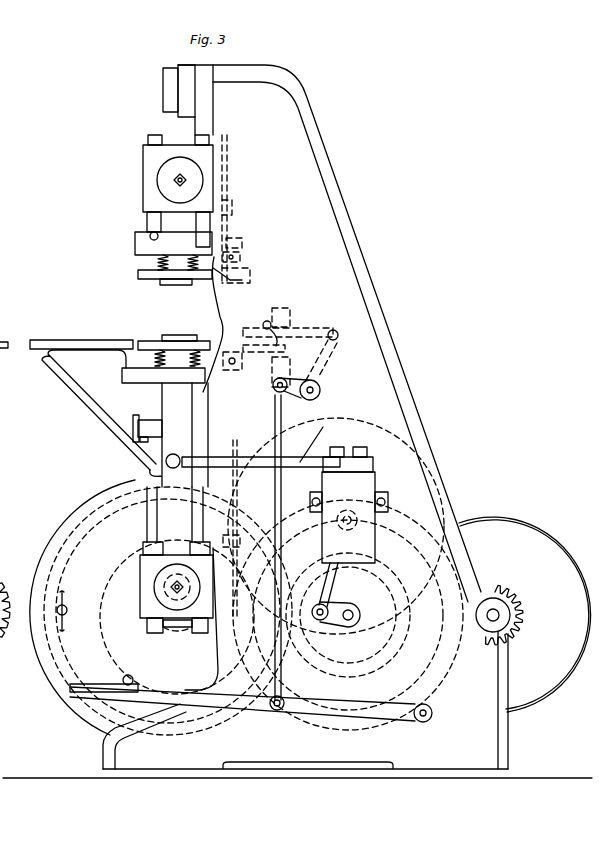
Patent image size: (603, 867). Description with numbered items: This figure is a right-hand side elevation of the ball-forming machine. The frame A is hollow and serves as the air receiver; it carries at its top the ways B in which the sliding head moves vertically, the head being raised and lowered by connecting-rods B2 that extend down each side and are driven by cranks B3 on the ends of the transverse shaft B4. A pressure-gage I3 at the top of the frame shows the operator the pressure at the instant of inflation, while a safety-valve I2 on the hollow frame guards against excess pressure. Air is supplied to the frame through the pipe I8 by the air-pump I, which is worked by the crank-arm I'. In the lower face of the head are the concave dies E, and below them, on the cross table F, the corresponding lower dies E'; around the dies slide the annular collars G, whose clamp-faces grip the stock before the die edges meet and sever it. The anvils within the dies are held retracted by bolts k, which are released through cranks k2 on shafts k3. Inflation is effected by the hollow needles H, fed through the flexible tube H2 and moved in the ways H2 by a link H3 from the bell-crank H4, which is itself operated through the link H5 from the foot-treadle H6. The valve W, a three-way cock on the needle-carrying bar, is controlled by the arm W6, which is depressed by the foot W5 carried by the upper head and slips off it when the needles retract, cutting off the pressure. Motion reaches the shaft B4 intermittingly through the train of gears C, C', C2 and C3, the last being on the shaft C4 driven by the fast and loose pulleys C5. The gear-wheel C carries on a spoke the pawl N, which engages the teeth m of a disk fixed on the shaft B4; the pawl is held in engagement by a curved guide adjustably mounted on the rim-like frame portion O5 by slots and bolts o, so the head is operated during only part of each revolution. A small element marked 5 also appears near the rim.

The frame A is at (297, 421).
The pressure-gage I3 is at (163, 90).
The ways B is at (196, 122).
The connecting-rods B2 is at (152, 240).
The concave molds or dies E is at (171, 279).
The bolts k is at (217, 290).
The shafts k3 is at (240, 246).
The cranks k2 is at (240, 262).
The foot W5 is at (222, 280).
The annular collars G is at (179, 343).
The lower dies E' is at (105, 339).
The cross table or support F is at (126, 381).
The safety-valve I2 is at (144, 420).
The hollow needles H is at (221, 330).
The flexible tube / ways H2 is at (254, 322).
The arm W6 is at (272, 329).
The valve W is at (304, 349).
The link H3 is at (322, 333).
The bell-crank H4 is at (330, 367).
The pipe I8 is at (341, 405).
The link H5 is at (280, 430).
The teeth m is at (180, 532).
The gear-wheel C is at (189, 594).
The cranks B3 is at (173, 576).
The shaft B4 is at (157, 611).
The slots and bolts o is at (66, 606).
The circular or rim-like portion of the frame O5 is at (43, 667).
The gear 5 is at (6, 640).
The foot-treadle H6 is at (83, 697).
The pawl N is at (133, 679).
The gear C2 is at (358, 727).
The air-pump I is at (349, 505).
The crank-arm I' is at (360, 595).
The gear C' is at (345, 574).
The gear C3 is at (494, 588).
The shaft C4 is at (500, 613).
The fast and loose pulleys C5 is at (525, 607).